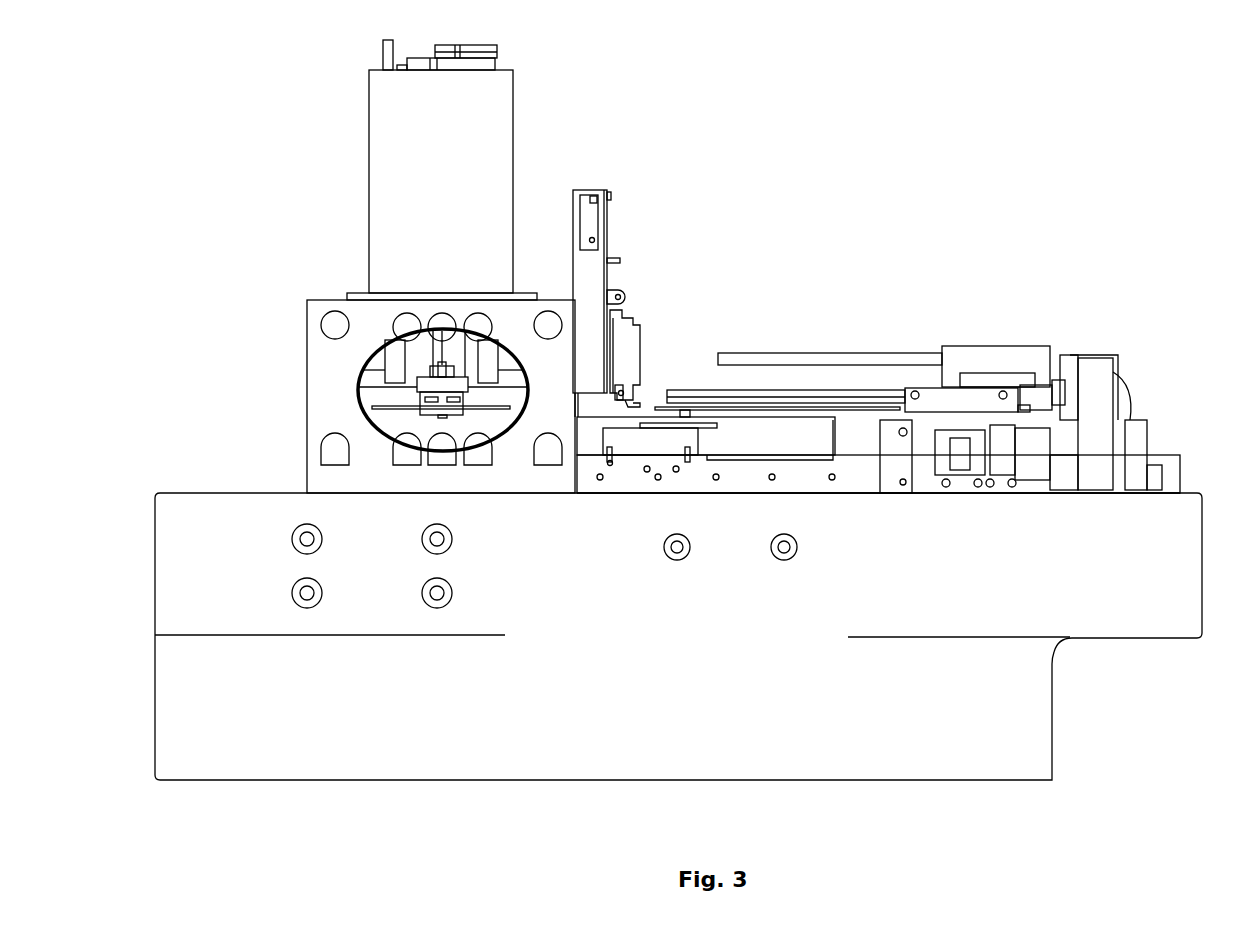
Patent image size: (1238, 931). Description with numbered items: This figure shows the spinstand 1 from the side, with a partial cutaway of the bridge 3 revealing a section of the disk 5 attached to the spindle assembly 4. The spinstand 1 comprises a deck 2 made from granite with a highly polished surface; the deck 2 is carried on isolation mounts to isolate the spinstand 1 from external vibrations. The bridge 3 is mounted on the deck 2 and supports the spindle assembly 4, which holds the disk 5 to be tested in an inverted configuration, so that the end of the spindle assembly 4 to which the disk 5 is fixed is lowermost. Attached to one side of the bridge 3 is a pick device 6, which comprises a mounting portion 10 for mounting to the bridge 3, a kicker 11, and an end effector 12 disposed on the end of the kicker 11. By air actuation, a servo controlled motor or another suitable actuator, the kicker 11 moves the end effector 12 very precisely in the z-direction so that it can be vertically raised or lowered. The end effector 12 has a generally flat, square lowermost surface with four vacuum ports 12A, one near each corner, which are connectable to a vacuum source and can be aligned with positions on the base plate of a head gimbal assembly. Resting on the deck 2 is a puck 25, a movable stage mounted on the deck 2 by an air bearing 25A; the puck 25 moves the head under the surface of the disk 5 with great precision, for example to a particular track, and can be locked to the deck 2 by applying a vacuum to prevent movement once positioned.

The spinstand 1 is at (893, 176).
The deck 2 is at (1020, 683).
The bridge 3 is at (323, 308).
The spindle assembly 4 is at (485, 114).
The disk 5 is at (378, 404).
The pick device 6 is at (591, 188).
The mounting portion 10 is at (588, 283).
The kicker 11 is at (622, 344).
The end effector 12 is at (709, 364).
The vacuum ports 12A is at (636, 405).
The puck 25 is at (747, 481).
The air bearing 25A is at (608, 498).